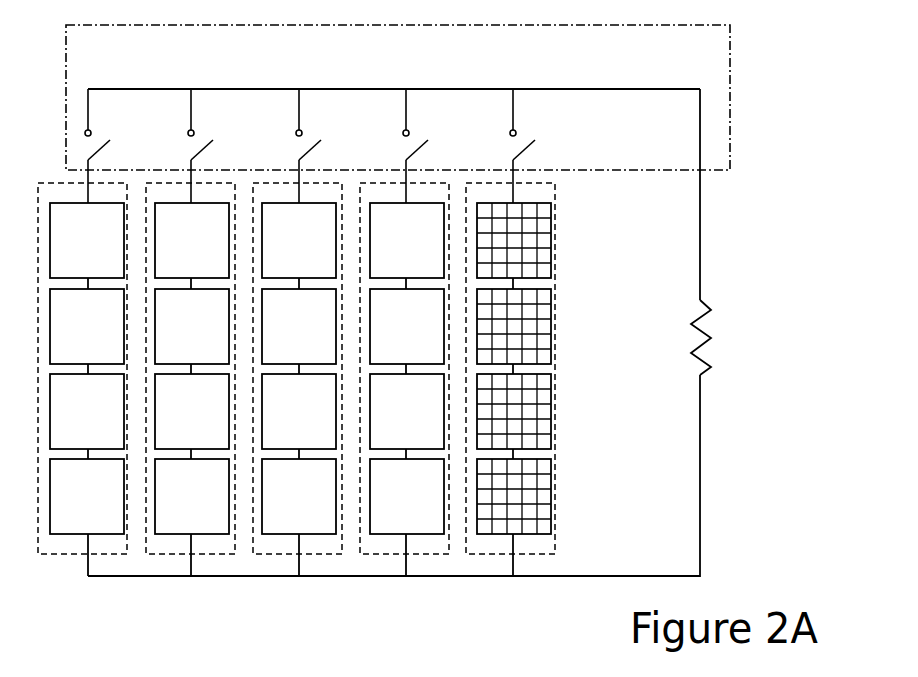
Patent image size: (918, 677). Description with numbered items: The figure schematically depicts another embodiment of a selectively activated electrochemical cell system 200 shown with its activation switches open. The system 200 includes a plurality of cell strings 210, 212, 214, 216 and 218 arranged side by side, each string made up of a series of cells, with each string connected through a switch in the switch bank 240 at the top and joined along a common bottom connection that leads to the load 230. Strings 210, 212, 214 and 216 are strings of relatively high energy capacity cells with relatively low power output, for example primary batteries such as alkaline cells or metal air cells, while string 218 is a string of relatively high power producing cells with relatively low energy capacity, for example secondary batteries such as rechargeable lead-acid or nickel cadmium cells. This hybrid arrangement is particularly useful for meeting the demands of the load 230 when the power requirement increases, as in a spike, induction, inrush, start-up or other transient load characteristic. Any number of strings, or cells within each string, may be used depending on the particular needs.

The selectively activated electrochemical cell system 200 is at (662, 549).
The cell string 210 is at (83, 553).
The cell string 212 is at (188, 553).
The cell string 214 is at (296, 553).
The cell string 216 is at (403, 553).
The cell string 218 is at (510, 553).
The load 230 is at (662, 337).
The switch bank 240 is at (432, 82).